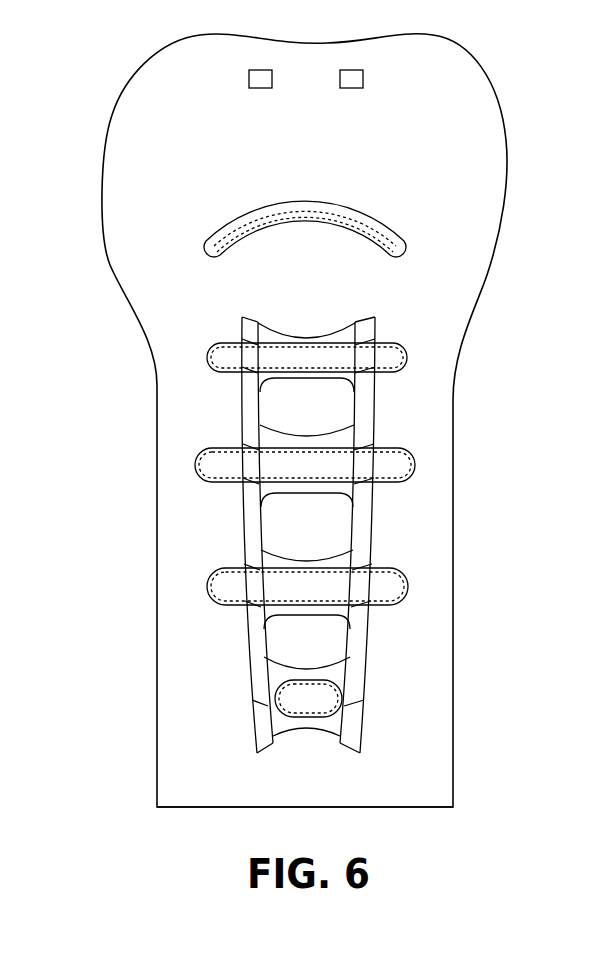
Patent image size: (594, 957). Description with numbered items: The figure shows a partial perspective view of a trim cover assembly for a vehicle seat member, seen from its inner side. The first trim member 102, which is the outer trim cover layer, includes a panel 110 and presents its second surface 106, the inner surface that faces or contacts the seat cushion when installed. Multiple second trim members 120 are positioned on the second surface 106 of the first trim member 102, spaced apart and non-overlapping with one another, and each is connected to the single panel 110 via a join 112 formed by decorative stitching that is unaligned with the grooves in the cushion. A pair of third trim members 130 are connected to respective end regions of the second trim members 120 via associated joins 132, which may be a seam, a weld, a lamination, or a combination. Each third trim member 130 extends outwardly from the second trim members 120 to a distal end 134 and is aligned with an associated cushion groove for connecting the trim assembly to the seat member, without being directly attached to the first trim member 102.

The first trim member 102 is at (405, 707).
The panel 110 is at (500, 712).
The second surface 106 is at (415, 408).
The join 112 is at (385, 340).
The second trim member 120 is at (405, 358).
The third trim member 130 is at (363, 522).
The join 132 is at (365, 558).
The distal end 134 is at (370, 585).